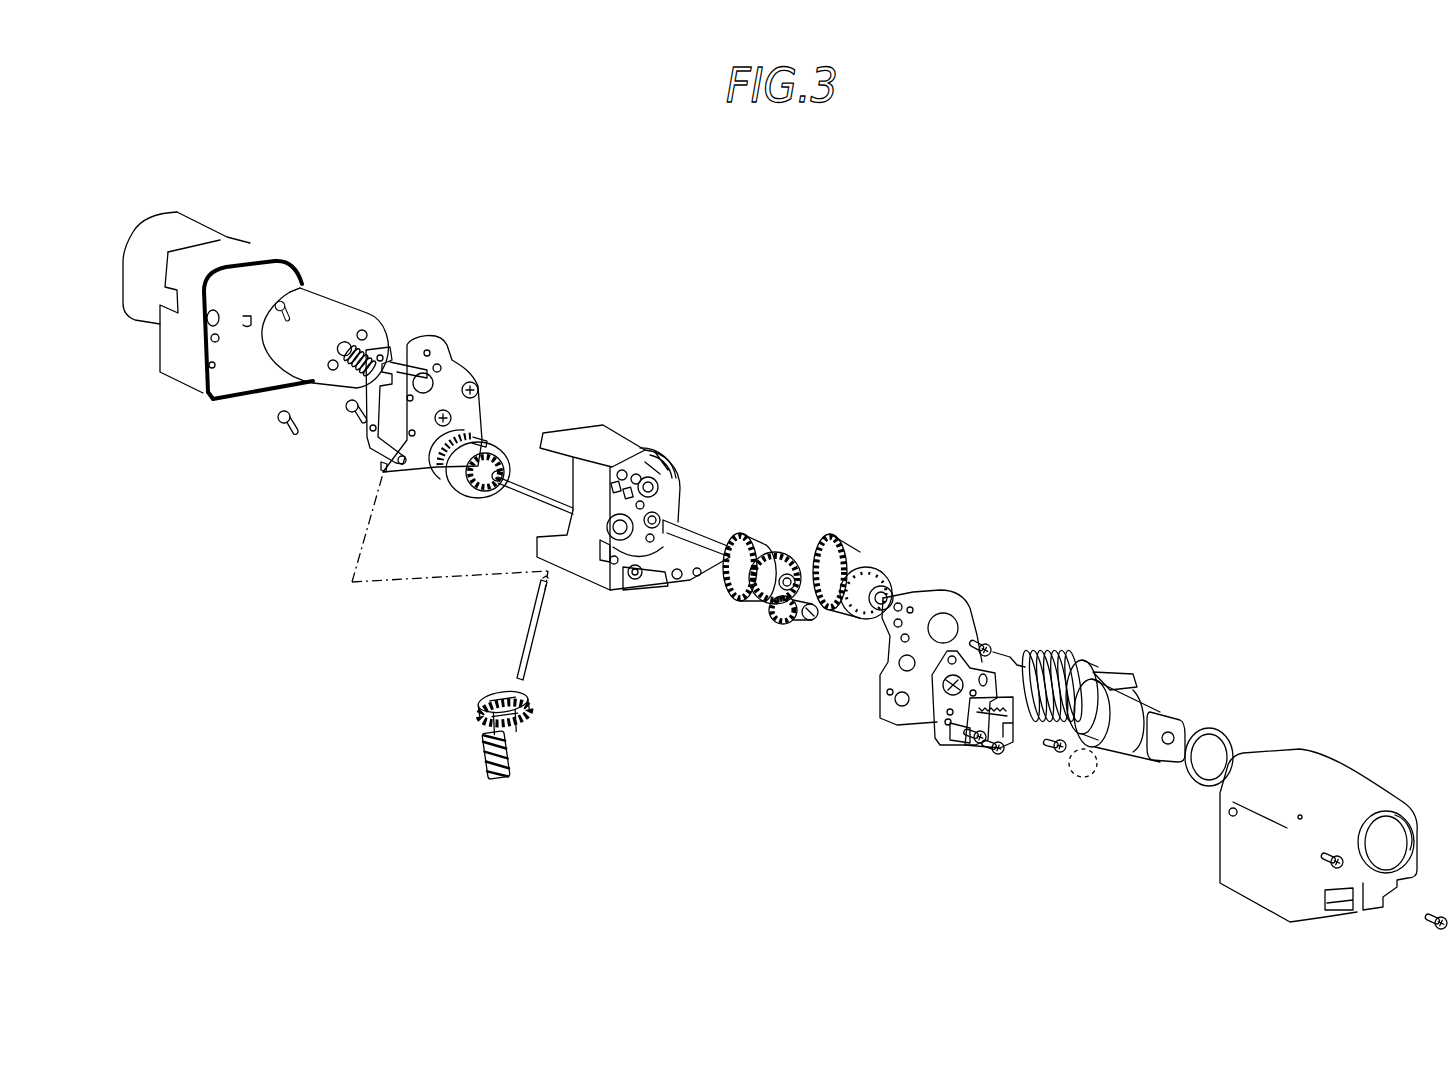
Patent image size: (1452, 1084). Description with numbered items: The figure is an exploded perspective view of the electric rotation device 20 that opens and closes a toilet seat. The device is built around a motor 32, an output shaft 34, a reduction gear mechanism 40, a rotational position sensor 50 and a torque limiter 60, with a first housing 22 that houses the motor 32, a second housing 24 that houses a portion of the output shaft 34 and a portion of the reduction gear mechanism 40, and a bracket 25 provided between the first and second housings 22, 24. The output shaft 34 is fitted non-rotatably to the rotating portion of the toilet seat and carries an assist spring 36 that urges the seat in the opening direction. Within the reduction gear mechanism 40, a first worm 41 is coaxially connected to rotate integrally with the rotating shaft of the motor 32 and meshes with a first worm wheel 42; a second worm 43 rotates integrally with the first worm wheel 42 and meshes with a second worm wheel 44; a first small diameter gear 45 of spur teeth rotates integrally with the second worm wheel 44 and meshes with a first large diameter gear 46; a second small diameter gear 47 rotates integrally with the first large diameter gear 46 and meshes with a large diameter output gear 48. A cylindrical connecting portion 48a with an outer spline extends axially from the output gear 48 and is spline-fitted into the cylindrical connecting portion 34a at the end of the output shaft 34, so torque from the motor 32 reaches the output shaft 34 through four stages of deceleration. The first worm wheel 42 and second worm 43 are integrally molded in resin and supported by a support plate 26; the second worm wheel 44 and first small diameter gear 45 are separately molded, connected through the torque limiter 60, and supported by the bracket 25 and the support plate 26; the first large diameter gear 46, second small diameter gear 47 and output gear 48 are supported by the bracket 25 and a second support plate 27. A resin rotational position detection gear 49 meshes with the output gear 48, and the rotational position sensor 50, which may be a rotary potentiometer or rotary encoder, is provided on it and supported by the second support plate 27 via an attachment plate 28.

The electric rotation device 20 is at (1218, 443).
The first housing 22 is at (250, 256).
The second housing 24 is at (1300, 768).
The bracket 25 is at (615, 433).
The support plate 26 is at (440, 343).
The second support plate 27 is at (963, 601).
The attachment plate 28 is at (945, 753).
The motor 32 is at (176, 222).
The output shaft 34 is at (1175, 718).
The cylindrical connecting portion 34a is at (1085, 664).
The assist spring 36 is at (1073, 650).
The reduction gear mechanism 40 is at (708, 633).
The first worm 41 is at (350, 404).
The first worm wheel 42 is at (483, 698).
The second worm 43 is at (480, 758).
The second worm wheel 44 is at (440, 486).
The first small diameter gear 45 is at (478, 492).
The first large diameter gear 46 is at (763, 537).
The second small diameter gear 47 is at (758, 605).
The output gear 48 is at (862, 548).
The connecting portion 48a is at (890, 573).
The rotational position detection gear 49 is at (790, 628).
The rotational position sensor 50 is at (1080, 777).
The torque limiter 60 is at (501, 445).